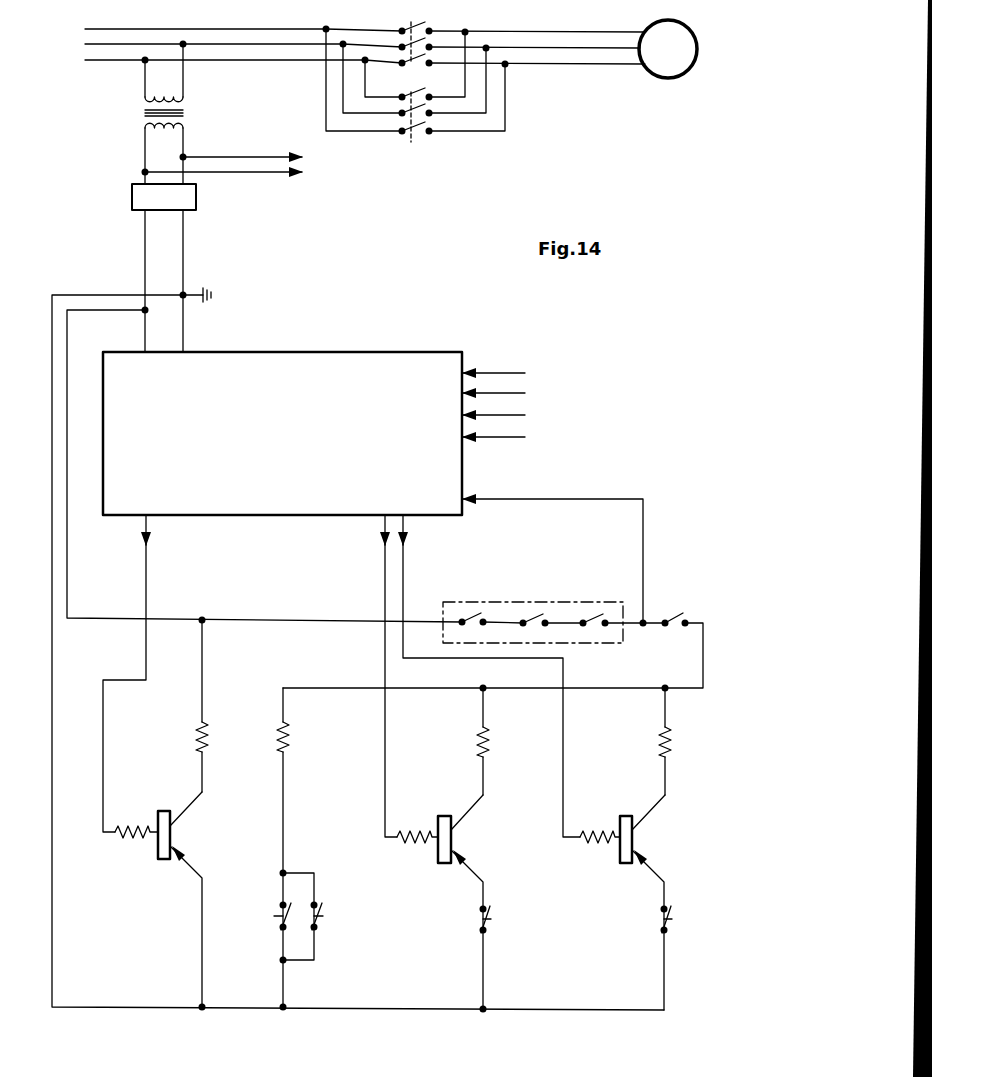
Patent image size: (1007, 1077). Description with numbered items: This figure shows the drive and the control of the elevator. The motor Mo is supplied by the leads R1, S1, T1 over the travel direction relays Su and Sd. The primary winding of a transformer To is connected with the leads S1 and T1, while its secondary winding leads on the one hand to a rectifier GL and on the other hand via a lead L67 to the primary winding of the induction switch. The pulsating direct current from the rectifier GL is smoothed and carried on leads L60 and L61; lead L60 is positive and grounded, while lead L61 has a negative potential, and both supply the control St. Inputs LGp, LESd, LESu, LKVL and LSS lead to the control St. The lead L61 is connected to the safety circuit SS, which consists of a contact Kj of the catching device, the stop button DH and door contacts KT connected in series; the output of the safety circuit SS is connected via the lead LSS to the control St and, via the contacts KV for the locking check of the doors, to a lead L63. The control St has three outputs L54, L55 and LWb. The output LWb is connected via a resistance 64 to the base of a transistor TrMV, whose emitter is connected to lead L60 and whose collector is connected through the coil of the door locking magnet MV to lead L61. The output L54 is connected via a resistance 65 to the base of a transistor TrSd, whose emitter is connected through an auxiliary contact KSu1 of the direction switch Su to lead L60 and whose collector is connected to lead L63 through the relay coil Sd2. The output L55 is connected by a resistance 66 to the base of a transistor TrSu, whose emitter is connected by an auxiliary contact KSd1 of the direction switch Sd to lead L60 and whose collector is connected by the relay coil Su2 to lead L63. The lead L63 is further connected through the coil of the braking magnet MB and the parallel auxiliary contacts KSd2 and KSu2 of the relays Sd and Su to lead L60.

The lead R1 is at (243, 18).
The lead S1 is at (243, 35).
The lead T1 is at (243, 58).
The travel direction relay Su is at (414, 19).
The travel direction relay Sd is at (412, 143).
The motor Mo is at (683, 60).
The transformer To is at (160, 99).
The lead L67 is at (306, 150).
The rectifier GL is at (178, 207).
The lead L61 is at (143, 238).
The lead L60 is at (184, 248).
The control St is at (302, 444).
The input LGp is at (514, 373).
The input LESd is at (518, 393).
The input LESu is at (518, 415).
The input LKVL is at (518, 437).
The lead LSS is at (497, 499).
The output LWb is at (148, 553).
The output L54 is at (383, 553).
The output L55 is at (405, 557).
The safety circuit SS is at (509, 602).
The switch Ki is at (473, 613).
The stop button DH is at (534, 613).
The door contacts KT is at (594, 613).
The contacts for the locking check of the doors KV is at (675, 608).
The lead L63 is at (700, 660).
The door locking magnet MV is at (215, 737).
The braking magnet MB is at (289, 742).
The relay coil Sd2 is at (490, 748).
The relay coil Su2 is at (679, 740).
The resistance 64 is at (131, 828).
The resistance 65 is at (411, 832).
The resistance 66 is at (594, 832).
The transistor TrMV is at (172, 838).
The transistor TrSd is at (453, 843).
The transistor TrSu is at (634, 843).
The auxiliary contact KSd2 is at (256, 917).
The auxiliary contact KSu2 is at (328, 916).
The auxiliary contact KSu1 is at (510, 920).
The auxiliary contact KSd1 is at (691, 920).